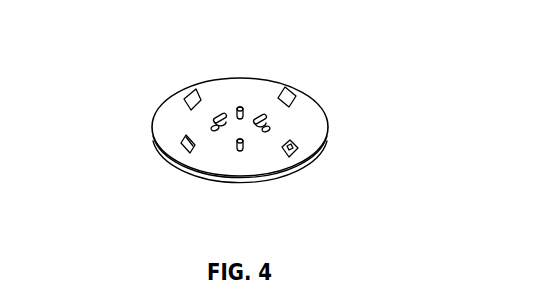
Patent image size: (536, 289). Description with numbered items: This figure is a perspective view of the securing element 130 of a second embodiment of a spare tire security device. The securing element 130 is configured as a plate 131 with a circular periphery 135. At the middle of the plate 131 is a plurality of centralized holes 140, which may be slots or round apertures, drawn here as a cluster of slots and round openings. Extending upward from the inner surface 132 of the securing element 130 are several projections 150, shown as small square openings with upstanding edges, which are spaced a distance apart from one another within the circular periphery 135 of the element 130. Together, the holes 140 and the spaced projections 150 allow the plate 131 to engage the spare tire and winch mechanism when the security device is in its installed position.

The securing element 130 is at (315, 123).
The plate 131 is at (131, 125).
The inner surface 132 is at (208, 158).
The circular periphery 135 is at (277, 180).
The centralized holes 140 is at (220, 112).
The projection 150 is at (293, 87).